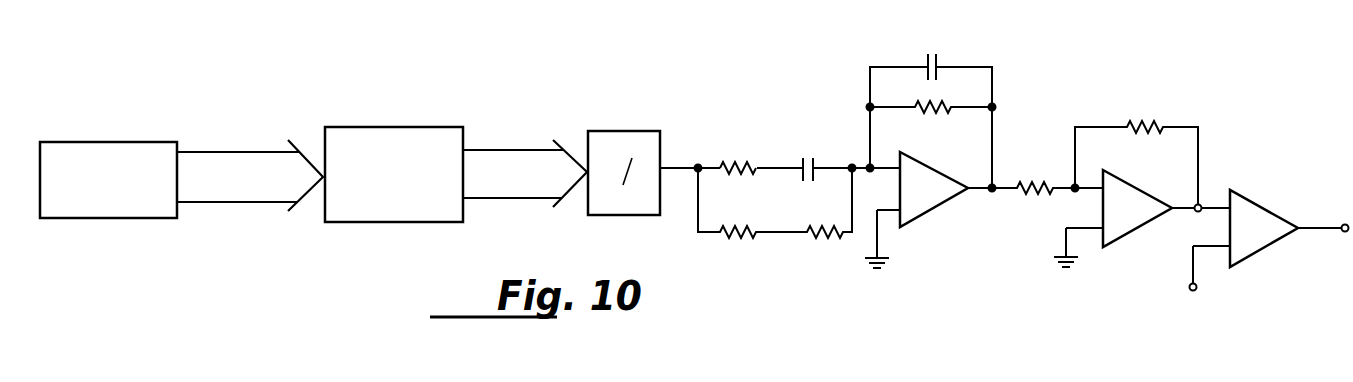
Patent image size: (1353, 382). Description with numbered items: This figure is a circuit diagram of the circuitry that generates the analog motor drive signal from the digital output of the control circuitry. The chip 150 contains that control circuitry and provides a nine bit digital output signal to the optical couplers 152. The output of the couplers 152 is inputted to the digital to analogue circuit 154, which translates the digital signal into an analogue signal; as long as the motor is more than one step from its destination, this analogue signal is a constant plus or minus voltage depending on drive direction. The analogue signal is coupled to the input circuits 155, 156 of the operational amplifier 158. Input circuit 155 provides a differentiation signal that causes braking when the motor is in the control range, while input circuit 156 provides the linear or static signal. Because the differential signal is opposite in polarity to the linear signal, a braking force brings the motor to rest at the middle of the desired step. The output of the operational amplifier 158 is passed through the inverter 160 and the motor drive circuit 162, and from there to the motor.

The chip 150 is at (142, 152).
The optical couplers 152 is at (388, 137).
The digital to analogue circuit 154 is at (622, 146).
The input circuit 155 is at (742, 162).
The input circuit 156 is at (783, 238).
The operational amplifier 158 is at (920, 180).
The inverter 160 is at (1127, 197).
The motor drive circuit 162 is at (1247, 218).